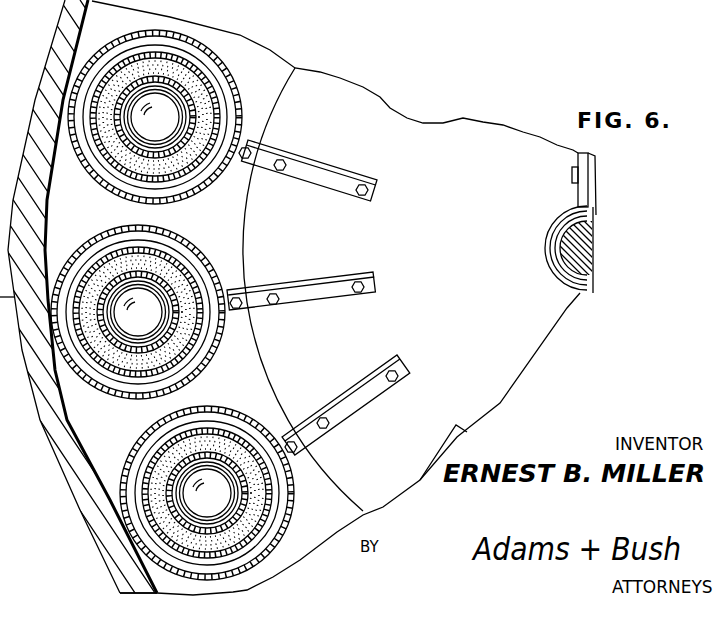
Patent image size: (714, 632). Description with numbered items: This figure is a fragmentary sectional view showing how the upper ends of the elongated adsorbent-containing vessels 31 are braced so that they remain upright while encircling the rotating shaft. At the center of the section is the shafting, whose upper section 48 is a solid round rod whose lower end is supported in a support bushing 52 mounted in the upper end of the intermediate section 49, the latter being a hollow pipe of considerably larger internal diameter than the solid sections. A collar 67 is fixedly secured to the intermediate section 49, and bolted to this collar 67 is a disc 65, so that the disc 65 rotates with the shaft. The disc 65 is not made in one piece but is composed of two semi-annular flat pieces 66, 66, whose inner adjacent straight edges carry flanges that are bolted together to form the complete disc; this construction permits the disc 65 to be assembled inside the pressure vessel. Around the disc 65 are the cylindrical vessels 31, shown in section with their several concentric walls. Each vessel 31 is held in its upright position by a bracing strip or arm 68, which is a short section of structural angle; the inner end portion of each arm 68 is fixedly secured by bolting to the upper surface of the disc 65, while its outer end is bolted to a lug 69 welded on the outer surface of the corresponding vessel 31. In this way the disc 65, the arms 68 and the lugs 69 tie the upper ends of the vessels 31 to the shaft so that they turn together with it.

The fluid treating material containing cylindrical vessel 31 is at (243, 100).
The upper section 48 is at (585, 257).
The intermediate section 49 is at (597, 209).
The support bushing 52 is at (597, 223).
The disc 65 is at (485, 118).
The semi-annular flat piece 66 is at (500, 193).
The collar 67 is at (548, 246).
The bracing strip or arm 68 is at (347, 172).
The lug 69 is at (240, 310).